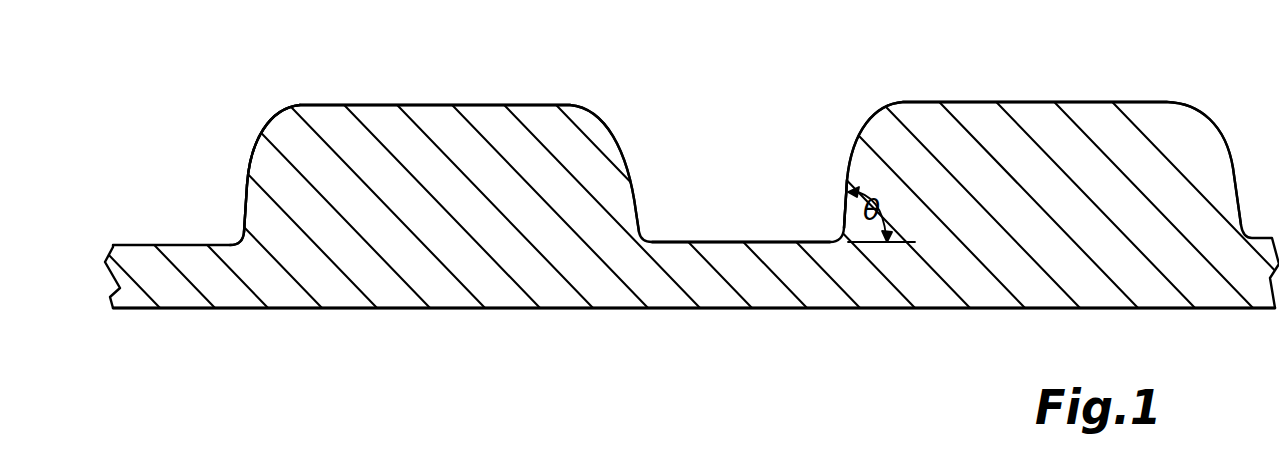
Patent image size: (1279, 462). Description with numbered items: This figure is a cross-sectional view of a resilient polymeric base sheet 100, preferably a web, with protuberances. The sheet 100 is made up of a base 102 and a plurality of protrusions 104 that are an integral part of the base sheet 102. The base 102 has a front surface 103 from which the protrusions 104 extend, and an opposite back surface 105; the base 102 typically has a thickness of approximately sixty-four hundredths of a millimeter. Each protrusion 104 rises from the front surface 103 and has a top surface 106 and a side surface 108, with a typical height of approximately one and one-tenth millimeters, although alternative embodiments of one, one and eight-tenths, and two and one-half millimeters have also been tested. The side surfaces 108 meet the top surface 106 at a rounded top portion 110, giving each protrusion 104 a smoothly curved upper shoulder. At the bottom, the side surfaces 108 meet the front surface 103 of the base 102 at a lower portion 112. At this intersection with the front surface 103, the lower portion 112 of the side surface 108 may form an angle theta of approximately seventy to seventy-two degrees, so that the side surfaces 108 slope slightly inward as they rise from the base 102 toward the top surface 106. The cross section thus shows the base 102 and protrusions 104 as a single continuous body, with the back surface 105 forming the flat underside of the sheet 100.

The resilient polymeric base sheet 100 is at (1118, 97).
The base 102 is at (760, 285).
The front surface 103 is at (710, 242).
The protrusions 104 is at (488, 130).
The back surface 105 is at (473, 310).
The top surface 106 is at (442, 105).
The side surface 108 is at (249, 184).
The rounded top portion 110 is at (263, 140).
The lower portion 112 is at (238, 239).